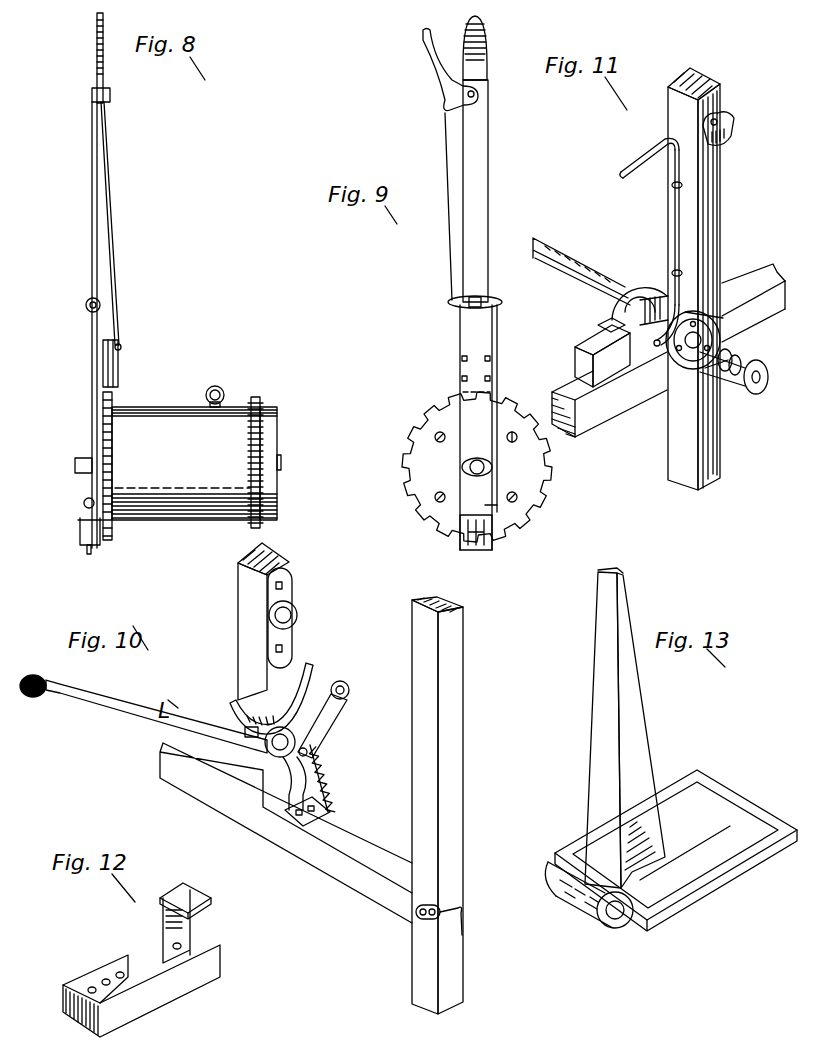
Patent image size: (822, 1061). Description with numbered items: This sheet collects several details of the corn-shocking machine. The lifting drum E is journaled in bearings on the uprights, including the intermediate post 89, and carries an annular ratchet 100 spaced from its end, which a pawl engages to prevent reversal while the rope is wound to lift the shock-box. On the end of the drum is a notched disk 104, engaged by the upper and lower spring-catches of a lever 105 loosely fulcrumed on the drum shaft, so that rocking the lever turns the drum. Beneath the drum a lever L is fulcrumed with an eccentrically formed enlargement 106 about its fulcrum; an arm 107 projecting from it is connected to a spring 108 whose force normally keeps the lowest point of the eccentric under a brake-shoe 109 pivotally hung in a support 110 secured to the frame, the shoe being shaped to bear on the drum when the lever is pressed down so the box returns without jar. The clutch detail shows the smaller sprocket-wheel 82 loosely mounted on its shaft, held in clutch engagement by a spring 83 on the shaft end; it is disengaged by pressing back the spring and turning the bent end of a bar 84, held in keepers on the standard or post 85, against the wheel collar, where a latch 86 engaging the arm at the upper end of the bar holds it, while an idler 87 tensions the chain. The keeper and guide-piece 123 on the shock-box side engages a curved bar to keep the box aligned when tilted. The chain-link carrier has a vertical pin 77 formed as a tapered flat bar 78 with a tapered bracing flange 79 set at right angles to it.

In FIG. 8, the annular ratchet 100 is at (262, 447).
In FIG. 8, the notched disk 104 is at (107, 445).
In FIG. 9, the notched disk 104 is at (477, 467).
In FIG. 8, the lever 105 is at (108, 250).
In FIG. 9, the lever 105 is at (473, 179).
In FIG. 11, the sprocket-wheel 82 is at (716, 329).
In FIG. 11, the spring 83 is at (738, 385).
In FIG. 11, the bar 84 is at (674, 216).
In FIG. 11, the standard or post 85 is at (716, 218).
In FIG. 11, the latch 86 is at (734, 127).
In FIG. 10, the idler 87 is at (252, 618).
In FIG. 10, the intermediate post 89 is at (447, 690).
In FIG. 10, the eccentrically formed enlargement 106 is at (293, 739).
In FIG. 10, the arm 107 is at (313, 753).
In FIG. 10, the spring 108 is at (333, 813).
In FIG. 10, the brake-shoe 109 is at (297, 695).
In FIG. 10, the support 110 is at (337, 708).
In FIG. 12, the keeper and guide-piece 123 is at (141, 960).
In FIG. 13, the vertical pin 77 is at (600, 706).
In FIG. 13, the flat bar 78 is at (600, 807).
In FIG. 13, the bracing flange 79 is at (676, 832).